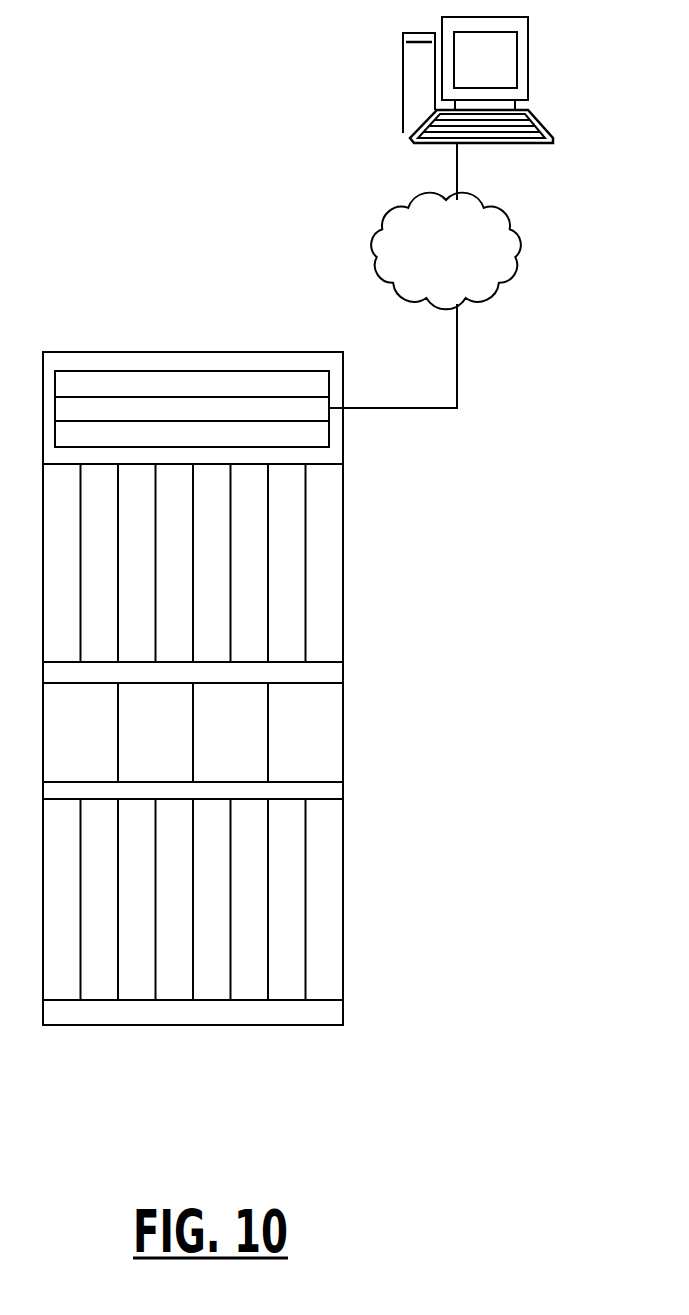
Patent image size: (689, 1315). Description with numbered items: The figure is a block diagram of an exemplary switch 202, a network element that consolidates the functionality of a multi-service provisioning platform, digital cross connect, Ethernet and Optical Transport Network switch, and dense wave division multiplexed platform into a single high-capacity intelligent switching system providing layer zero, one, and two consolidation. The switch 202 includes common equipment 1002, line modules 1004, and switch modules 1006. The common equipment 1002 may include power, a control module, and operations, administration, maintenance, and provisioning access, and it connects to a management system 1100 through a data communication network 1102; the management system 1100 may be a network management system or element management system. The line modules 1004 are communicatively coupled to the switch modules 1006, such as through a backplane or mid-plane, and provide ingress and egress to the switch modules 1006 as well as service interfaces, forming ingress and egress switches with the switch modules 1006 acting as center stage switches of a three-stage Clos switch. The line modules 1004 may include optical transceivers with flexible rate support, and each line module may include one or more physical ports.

The management system 1100 is at (528, 67).
The data communication network 1102 is at (473, 253).
The switch 202 is at (200, 248).
The common equipment 1002 is at (189, 370).
The line modules 1004 is at (343, 525).
The switch modules 1006 is at (343, 743).